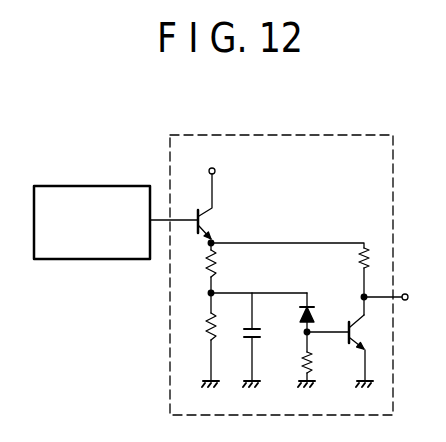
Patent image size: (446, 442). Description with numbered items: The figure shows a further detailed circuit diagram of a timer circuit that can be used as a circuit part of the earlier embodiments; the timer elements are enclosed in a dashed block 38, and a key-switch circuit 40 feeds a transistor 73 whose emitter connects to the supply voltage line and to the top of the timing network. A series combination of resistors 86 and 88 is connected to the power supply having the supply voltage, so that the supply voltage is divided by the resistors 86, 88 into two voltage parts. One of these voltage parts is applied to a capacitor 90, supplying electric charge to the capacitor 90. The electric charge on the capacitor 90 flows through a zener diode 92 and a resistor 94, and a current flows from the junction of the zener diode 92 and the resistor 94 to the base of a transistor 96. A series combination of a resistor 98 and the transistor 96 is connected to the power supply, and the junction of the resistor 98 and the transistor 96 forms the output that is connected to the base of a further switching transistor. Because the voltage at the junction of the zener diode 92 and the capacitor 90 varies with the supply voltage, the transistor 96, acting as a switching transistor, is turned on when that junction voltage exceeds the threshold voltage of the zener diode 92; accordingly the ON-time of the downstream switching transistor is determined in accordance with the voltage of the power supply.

The control circuit (dashed enclosure) 38 is at (170, 152).
The key-switch circuit 40 is at (112, 259).
The transistor 73 is at (214, 222).
The resistor 86 is at (217, 264).
The resistor 88 is at (204, 333).
The capacitor 90 is at (258, 335).
The zener diode 92 is at (311, 306).
The resistor 94 is at (312, 356).
The transistor 96 is at (366, 334).
The resistor 98 is at (360, 260).